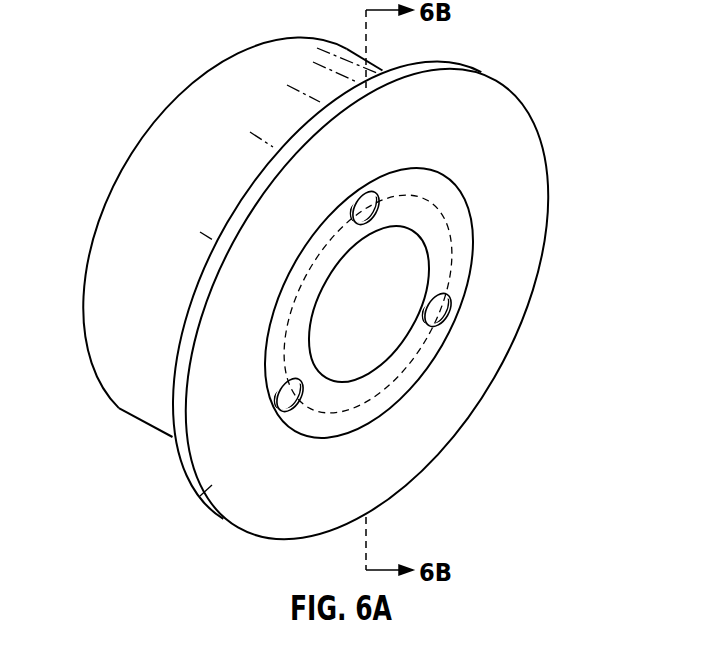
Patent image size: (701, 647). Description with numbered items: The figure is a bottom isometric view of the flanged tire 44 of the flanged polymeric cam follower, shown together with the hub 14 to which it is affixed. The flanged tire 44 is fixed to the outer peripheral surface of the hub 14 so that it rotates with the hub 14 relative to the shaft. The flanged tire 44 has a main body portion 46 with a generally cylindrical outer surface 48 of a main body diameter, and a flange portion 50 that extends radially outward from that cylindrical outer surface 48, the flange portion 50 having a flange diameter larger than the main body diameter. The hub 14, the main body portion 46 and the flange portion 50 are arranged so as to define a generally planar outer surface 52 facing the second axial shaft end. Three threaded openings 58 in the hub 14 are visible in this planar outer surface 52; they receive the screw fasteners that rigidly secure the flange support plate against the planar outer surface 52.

The hub 14 is at (447, 230).
The flanged tire 44 is at (528, 140).
The main body portion 46 is at (140, 145).
The generally cylindrical outer surface 48 is at (240, 122).
The flange portion 50 is at (468, 73).
The generally planar outer surface 52 is at (207, 490).
The threaded openings 58 is at (447, 313).